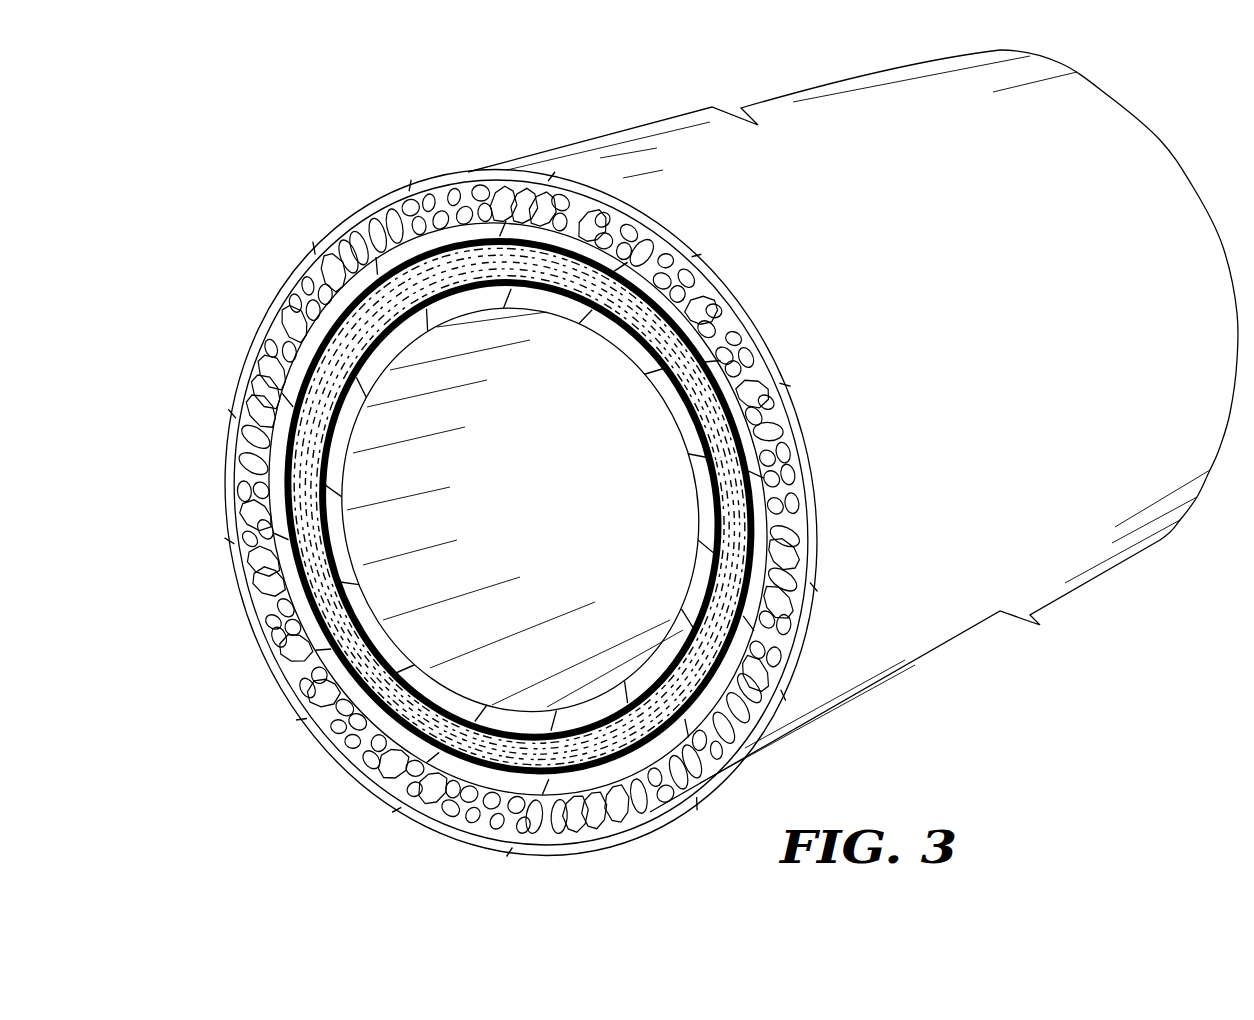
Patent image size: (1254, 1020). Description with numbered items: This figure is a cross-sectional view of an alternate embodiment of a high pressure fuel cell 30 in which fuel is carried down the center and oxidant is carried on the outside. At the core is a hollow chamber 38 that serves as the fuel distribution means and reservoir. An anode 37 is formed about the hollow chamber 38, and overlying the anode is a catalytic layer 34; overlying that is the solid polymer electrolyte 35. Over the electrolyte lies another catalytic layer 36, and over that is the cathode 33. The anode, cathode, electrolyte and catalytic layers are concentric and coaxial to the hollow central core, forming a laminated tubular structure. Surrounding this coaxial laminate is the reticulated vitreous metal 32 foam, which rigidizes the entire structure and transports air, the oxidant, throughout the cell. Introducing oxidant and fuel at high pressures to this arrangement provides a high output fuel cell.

The cell 30 is at (1021, 763).
The reticulated vitreous metal 32 is at (296, 448).
The cathode 33 is at (279, 478).
The catalytic layer 34 is at (270, 657).
The solid polymer electrolyte 35 is at (312, 548).
The catalytic layer 36 is at (273, 514).
The anode 37 is at (317, 727).
The hollow chamber 38 is at (535, 504).